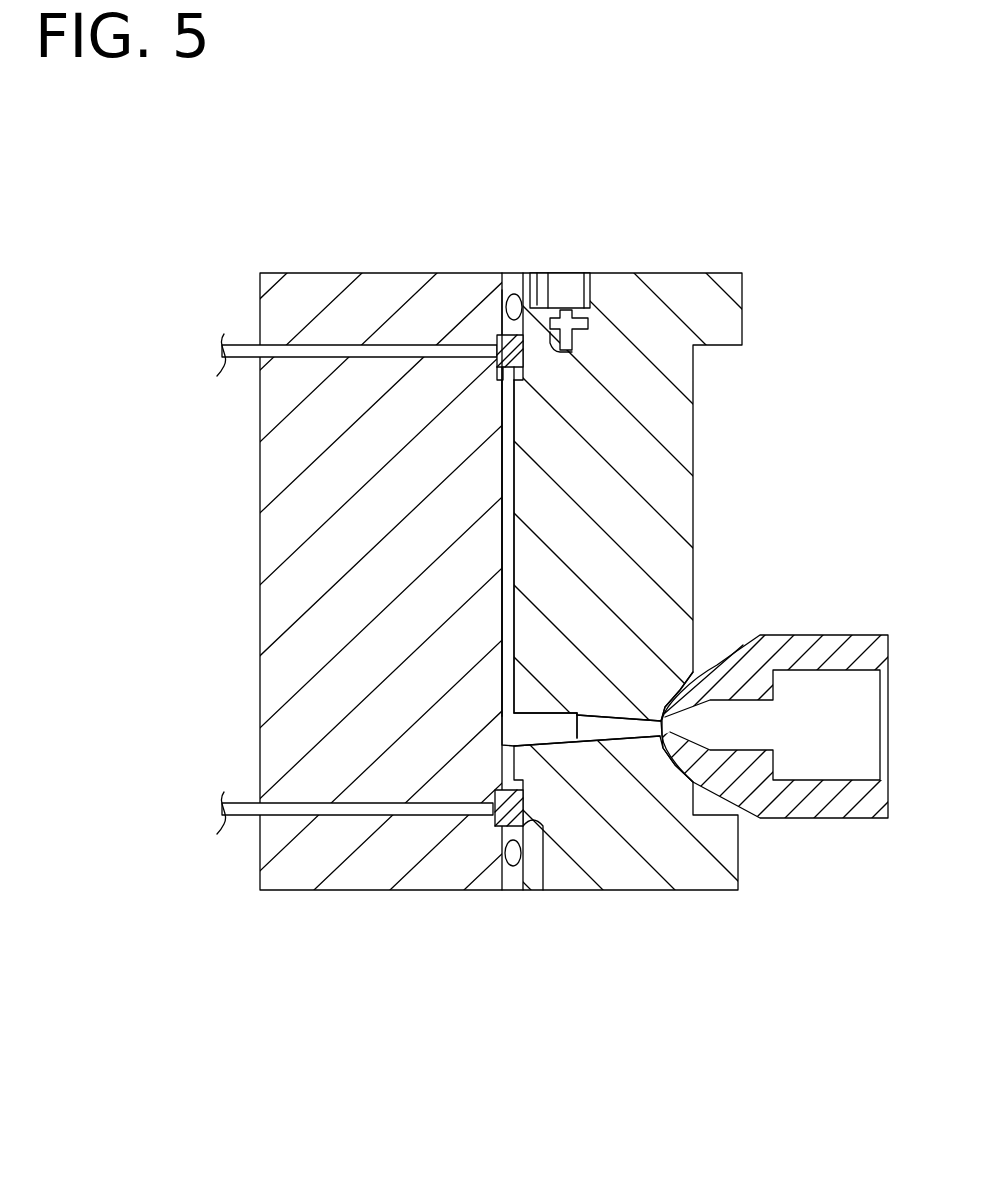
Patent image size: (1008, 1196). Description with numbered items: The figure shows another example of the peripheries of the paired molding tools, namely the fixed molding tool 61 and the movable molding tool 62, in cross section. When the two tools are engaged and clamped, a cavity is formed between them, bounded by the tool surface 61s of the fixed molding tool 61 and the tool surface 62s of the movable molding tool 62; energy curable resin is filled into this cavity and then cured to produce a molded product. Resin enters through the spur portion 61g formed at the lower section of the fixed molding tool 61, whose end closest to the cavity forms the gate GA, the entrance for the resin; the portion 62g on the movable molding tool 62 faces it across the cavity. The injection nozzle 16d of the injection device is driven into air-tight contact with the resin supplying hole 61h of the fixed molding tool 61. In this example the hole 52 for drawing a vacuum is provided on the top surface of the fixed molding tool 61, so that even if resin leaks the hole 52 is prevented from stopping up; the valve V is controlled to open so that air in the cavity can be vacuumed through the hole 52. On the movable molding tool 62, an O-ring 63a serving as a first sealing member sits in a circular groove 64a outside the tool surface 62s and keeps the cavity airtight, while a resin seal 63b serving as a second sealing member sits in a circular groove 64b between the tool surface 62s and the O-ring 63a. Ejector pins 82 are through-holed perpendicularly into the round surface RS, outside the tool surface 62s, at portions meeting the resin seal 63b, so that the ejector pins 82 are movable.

The movable molding tool 62 is at (358, 905).
The fixed molding tool 61 is at (680, 908).
The injection nozzle 16d is at (765, 632).
The ejector pins 82 is at (240, 343).
The circular groove 64a is at (526, 315).
The circular groove 64b is at (500, 830).
The round surface RS is at (497, 338).
The O-ring 63a is at (512, 333).
The resin seal 63b is at (527, 310).
The hole 52 is at (548, 283).
The valve V is at (578, 312).
The tool surface 61s is at (515, 452).
The spur portion 61g is at (548, 712).
The resin supplying hole 61h is at (645, 722).
The tool surface 62s is at (502, 568).
The groove of block 62 62g is at (528, 706).
The gate GA is at (533, 750).